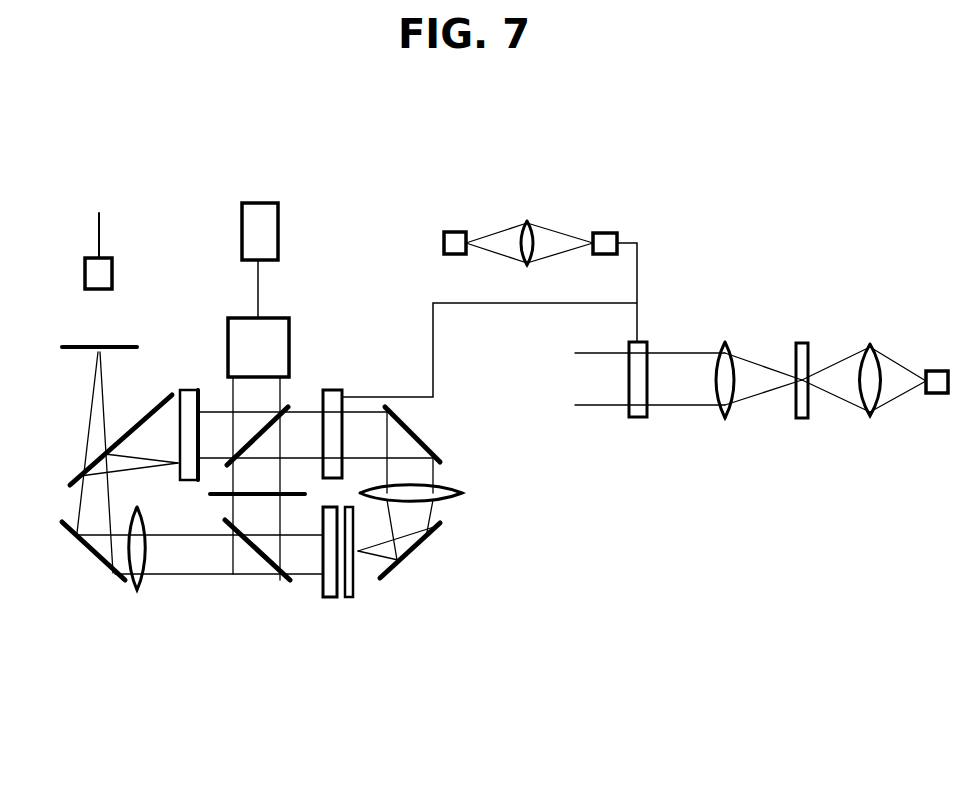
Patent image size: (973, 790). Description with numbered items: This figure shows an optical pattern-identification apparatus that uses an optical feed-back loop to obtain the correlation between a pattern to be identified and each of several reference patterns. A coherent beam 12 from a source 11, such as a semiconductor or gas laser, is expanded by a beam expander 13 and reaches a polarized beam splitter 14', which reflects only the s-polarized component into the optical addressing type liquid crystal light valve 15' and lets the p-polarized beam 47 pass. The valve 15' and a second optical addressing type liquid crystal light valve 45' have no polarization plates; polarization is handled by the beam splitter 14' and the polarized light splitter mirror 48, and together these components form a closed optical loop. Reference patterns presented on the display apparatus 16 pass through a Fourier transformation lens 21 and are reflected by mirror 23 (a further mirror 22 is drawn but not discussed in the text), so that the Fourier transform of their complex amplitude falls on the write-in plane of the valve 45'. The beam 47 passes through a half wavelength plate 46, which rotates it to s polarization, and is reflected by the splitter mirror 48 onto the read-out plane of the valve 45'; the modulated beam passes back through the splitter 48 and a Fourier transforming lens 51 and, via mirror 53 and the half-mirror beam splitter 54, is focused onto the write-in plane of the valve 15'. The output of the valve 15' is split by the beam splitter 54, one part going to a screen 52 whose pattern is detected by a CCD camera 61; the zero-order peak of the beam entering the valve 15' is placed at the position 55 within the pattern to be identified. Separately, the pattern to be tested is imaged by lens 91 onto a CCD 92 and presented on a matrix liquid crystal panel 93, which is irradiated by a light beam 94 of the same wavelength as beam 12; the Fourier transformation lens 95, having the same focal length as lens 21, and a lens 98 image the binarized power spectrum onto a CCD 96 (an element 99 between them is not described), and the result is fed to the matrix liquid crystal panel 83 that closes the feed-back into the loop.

The source 11 is at (278, 216).
The coherent beam 12 is at (266, 282).
The beam expander 13 is at (287, 318).
The polarized beam splitter 14' is at (280, 405).
The optical addressing type liquid crystal light valve 15' is at (178, 412).
The display apparatus 16 is at (342, 390).
The Fourier transformation lens 21 is at (455, 488).
The mirror 22 is at (430, 437).
The mirror 23 is at (420, 557).
The optical addressing type liquid crystal light valve 45' is at (324, 578).
The half wavelength plate 46 is at (225, 497).
The beam 47 is at (224, 480).
The polarized light splitter mirror 48 is at (283, 582).
The Fourier transforming lens 51 is at (134, 592).
The screen 52 is at (78, 347).
The mirror 53 is at (92, 555).
The beam splitter 54 is at (70, 485).
The position 55 is at (176, 465).
The CCD camera 61 is at (85, 266).
The matrix liquid crystal panel 83 is at (353, 590).
The lens 91 is at (527, 220).
The CCD 92 is at (610, 233).
The matrix liquid crystal panel 93 is at (640, 418).
The light beam 94 is at (592, 407).
The Fourier transformation lens 95 is at (726, 418).
The CCD 96 is at (932, 371).
The lens 98 is at (870, 344).
The pinhole plate 99 is at (800, 343).